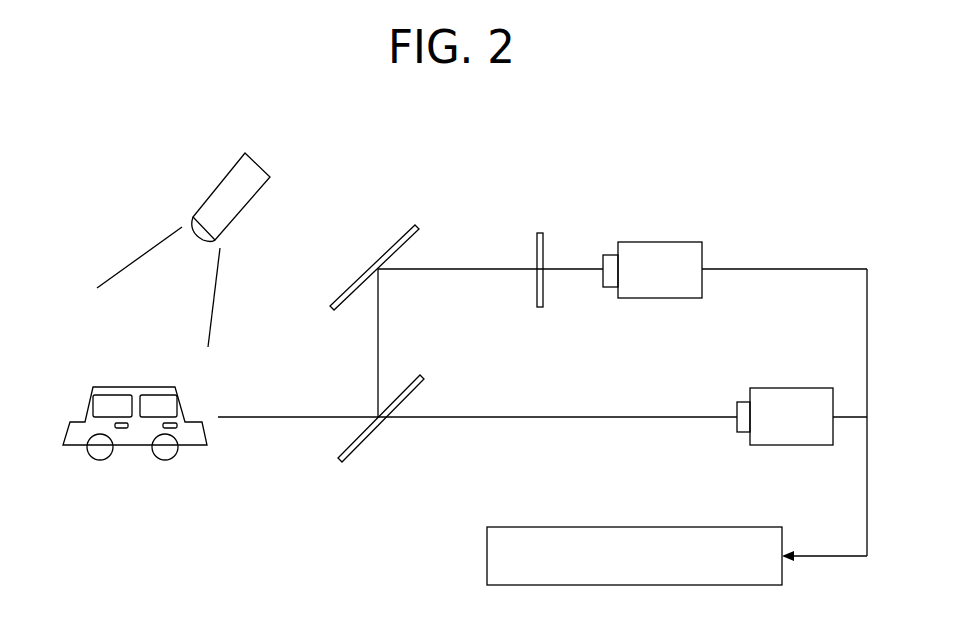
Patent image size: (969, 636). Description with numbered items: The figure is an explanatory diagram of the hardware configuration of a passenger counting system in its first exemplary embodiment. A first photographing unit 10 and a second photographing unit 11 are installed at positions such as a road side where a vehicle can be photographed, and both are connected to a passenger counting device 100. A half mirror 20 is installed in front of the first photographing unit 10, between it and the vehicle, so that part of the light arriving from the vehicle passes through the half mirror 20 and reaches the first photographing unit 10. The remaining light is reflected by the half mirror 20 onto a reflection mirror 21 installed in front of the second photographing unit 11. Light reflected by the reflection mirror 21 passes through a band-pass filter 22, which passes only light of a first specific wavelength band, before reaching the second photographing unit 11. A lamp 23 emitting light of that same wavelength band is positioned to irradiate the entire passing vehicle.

The first photographing unit 10 is at (807, 388).
The second photographing unit 11 is at (682, 242).
The half mirror 20 is at (342, 462).
The reflection mirror 21 is at (415, 225).
The band-pass filter 22 is at (540, 233).
The lamp 23 is at (250, 158).
The passenger counting device 100 is at (543, 527).